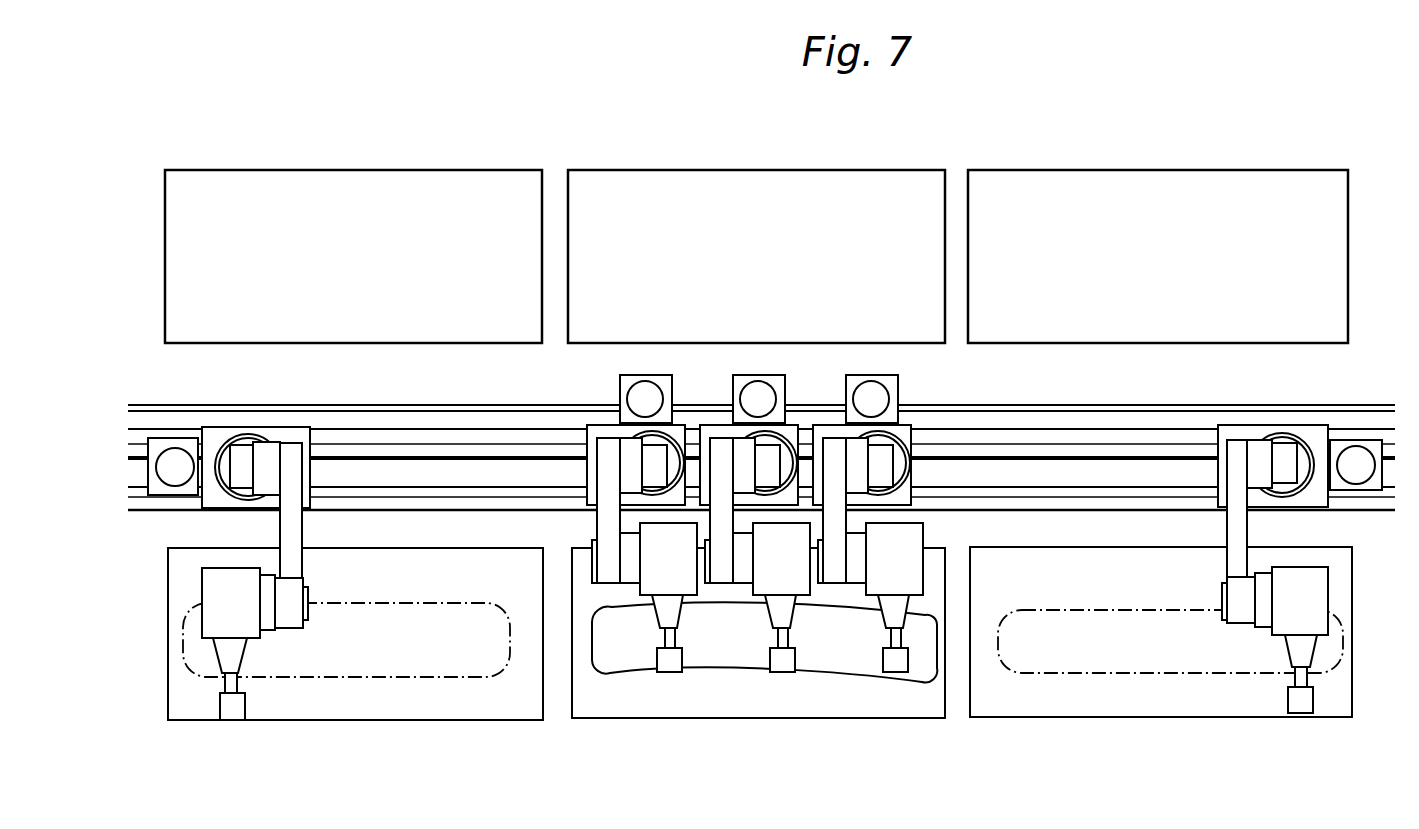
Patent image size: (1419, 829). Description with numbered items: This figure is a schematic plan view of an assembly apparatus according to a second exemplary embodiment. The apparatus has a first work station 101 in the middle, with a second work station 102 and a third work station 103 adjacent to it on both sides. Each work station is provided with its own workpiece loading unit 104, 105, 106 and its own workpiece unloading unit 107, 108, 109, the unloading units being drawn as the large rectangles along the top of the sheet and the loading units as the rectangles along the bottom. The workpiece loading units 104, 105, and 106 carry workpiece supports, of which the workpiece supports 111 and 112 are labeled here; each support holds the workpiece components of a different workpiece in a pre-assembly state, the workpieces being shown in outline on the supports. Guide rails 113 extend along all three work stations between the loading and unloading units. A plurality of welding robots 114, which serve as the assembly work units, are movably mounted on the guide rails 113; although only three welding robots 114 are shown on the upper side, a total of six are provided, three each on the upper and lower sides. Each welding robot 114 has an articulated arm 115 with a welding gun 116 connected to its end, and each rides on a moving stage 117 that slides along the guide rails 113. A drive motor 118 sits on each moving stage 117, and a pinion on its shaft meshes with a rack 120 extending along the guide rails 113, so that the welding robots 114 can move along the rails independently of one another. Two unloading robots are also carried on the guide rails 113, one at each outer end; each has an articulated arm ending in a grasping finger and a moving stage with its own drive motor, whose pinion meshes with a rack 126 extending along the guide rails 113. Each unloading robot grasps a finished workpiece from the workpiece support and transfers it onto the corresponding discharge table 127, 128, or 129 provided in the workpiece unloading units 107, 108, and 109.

The first work station 101 is at (739, 584).
The second work station 102 is at (329, 594).
The third work station 103 is at (1186, 588).
The workpiece loading unit 104 is at (758, 659).
The workpiece loading unit 105 is at (355, 664).
The workpiece loading unit 106 is at (1161, 571).
The workpiece unloading unit 107 is at (886, 190).
The workpiece unloading unit 108 is at (486, 190).
The workpiece unloading unit 109 is at (1290, 190).
The workpiece support 111 is at (669, 722).
The workpiece support 112 is at (433, 722).
The guide rails 113 is at (1079, 718).
The welding robot 114 is at (607, 450).
The articulated arm 115 is at (605, 520).
The welding gun 116 is at (670, 667).
The moving stage 117 is at (739, 555).
The drive motor 118 is at (641, 396).
The rack 120 is at (761, 432).
The rack 126 is at (1180, 455).
The discharge table 127 is at (756, 231).
The discharge table 128 is at (353, 231).
The discharge table 129 is at (1158, 231).